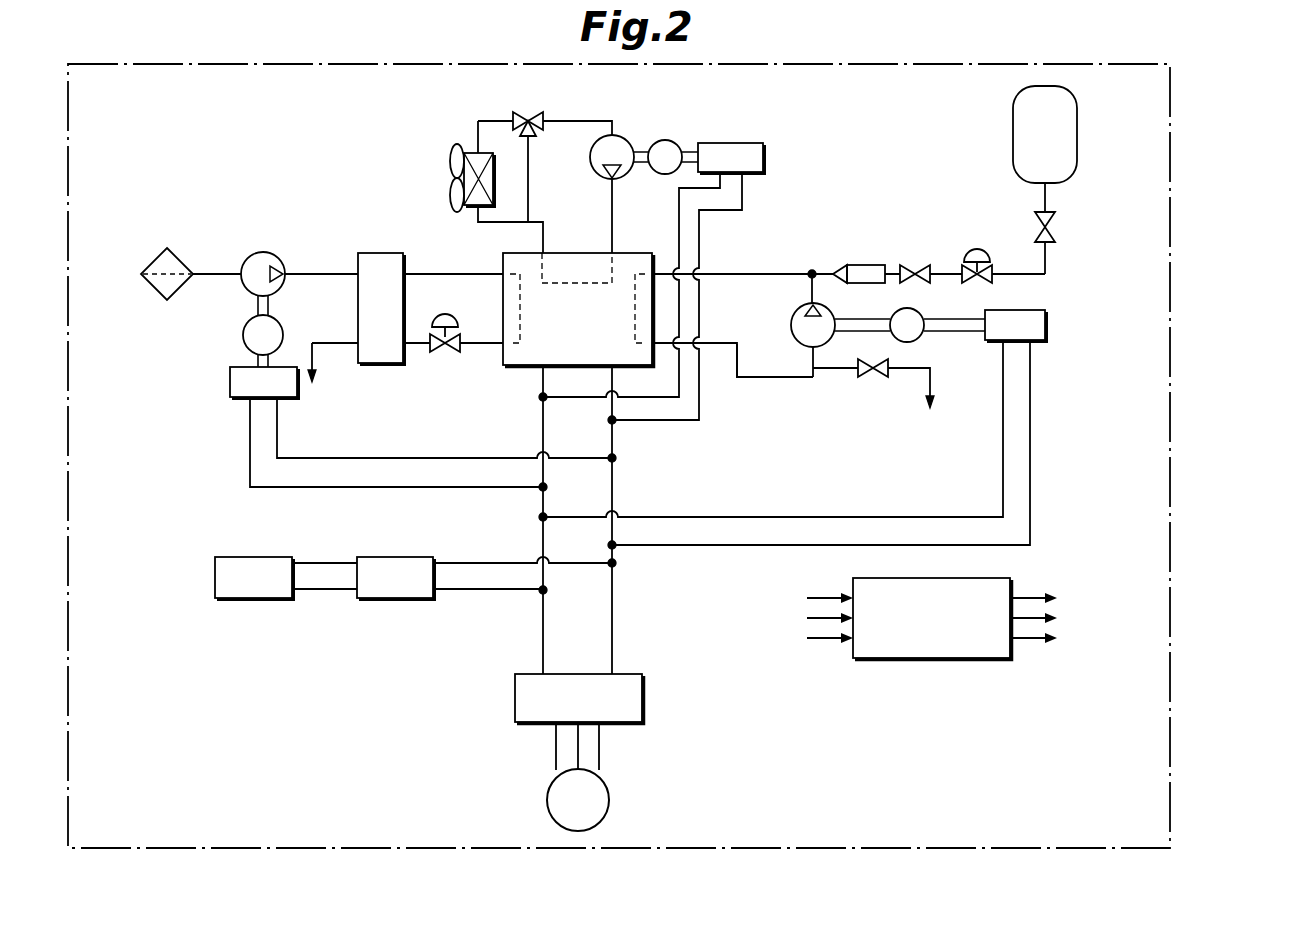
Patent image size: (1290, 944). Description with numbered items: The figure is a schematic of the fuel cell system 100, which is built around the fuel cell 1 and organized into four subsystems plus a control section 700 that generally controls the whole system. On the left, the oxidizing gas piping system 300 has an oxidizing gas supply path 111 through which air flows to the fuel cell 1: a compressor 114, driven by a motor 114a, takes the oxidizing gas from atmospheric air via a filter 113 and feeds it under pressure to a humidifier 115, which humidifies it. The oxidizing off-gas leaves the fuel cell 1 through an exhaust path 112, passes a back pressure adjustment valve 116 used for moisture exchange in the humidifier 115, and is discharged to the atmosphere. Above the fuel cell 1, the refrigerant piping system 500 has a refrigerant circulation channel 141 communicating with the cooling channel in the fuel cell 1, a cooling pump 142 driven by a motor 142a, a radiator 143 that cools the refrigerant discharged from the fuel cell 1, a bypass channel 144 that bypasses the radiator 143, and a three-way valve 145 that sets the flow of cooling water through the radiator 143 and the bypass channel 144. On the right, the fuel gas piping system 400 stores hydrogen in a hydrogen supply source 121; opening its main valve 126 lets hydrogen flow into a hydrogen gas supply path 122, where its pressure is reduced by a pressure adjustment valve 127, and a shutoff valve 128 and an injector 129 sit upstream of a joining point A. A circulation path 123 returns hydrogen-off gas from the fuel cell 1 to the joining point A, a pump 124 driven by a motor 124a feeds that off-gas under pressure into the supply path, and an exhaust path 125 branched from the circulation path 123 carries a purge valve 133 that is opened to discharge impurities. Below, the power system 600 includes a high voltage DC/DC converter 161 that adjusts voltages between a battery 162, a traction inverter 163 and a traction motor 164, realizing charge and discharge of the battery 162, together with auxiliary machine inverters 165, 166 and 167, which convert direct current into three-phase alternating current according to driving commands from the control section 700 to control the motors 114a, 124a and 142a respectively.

The fuel cell system 100 is at (1170, 119).
The fuel cell 1 is at (508, 368).
The oxidizing gas piping system 300 is at (350, 222).
The oxidizing gas supply path 111 is at (430, 272).
The exhaust path 112 is at (322, 350).
The filter 113 is at (180, 258).
The compressor 114 is at (262, 252).
The motor 114a is at (242, 338).
The humidifier 115 is at (385, 366).
The back pressure adjustment valve 116 is at (435, 356).
The auxiliary machine inverter 165 is at (229, 382).
The refrigerant piping system 500 is at (483, 112).
The refrigerant circulation channel 141 is at (590, 120).
The cooling pump 142 is at (630, 140).
The motor 142a is at (684, 143).
The radiator 143 is at (452, 165).
The bypass channel 144 is at (530, 172).
The three-way valve 145 is at (527, 113).
The auxiliary machine inverter 167 is at (765, 156).
The fuel gas piping system 400 is at (975, 197).
The hydrogen supply source 121 is at (1078, 130).
The hydrogen gas supply path 122 is at (1048, 255).
The circulation path 123 is at (783, 378).
The pump 124 is at (794, 318).
The motor 124a is at (920, 311).
The exhaust path 125 is at (933, 374).
The main valve 126 is at (1056, 222).
The pressure adjustment valve 127 is at (980, 250).
The shutoff valve 128 is at (914, 264).
The injector 129 is at (855, 264).
The purge valve 133 is at (874, 380).
The auxiliary machine inverter 166 is at (1047, 322).
The joining point A is at (810, 270).
The power system 600 is at (703, 484).
The high voltage DC/DC converter 161 is at (392, 557).
The battery 162 is at (258, 557).
The traction inverter 163 is at (646, 683).
The traction motor 164 is at (611, 797).
The control section 700 is at (935, 661).